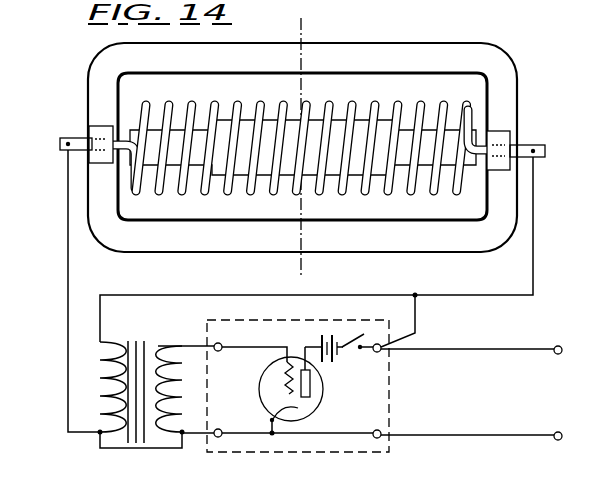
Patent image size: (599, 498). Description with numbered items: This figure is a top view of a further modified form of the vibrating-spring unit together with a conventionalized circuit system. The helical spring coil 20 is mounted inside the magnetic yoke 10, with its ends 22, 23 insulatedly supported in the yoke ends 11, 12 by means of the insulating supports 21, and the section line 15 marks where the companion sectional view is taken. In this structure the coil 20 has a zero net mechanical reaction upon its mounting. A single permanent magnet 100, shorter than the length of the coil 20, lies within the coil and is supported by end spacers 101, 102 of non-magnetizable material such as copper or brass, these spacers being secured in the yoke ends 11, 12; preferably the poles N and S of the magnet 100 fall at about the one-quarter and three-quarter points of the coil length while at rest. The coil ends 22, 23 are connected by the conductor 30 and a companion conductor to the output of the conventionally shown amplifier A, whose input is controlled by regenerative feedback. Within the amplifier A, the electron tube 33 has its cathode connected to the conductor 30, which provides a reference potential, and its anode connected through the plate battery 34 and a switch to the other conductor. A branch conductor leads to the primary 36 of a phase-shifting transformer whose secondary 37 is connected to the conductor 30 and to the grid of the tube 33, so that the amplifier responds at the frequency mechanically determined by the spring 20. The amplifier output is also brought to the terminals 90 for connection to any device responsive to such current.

The magnetic yoke 10 is at (441, 39).
The yoke end 11 is at (97, 89).
The yoke end 12 is at (506, 100).
The section line 15 is at (306, 270).
The spring coil 20 is at (273, 102).
The insulating bushing 21 is at (100, 127).
The coil end 22 is at (58, 145).
The coil end 23 is at (546, 152).
The conductor 30 is at (67, 273).
The electron tube 33 is at (265, 380).
The plate battery 34 is at (360, 338).
The primary 36 is at (140, 384).
The secondary 37 is at (185, 380).
The terminals 90 is at (472, 392).
The permanent magnet 100 is at (322, 136).
The end spacer 101 is at (125, 130).
The end spacer 102 is at (481, 162).
The amplifier A is at (303, 455).